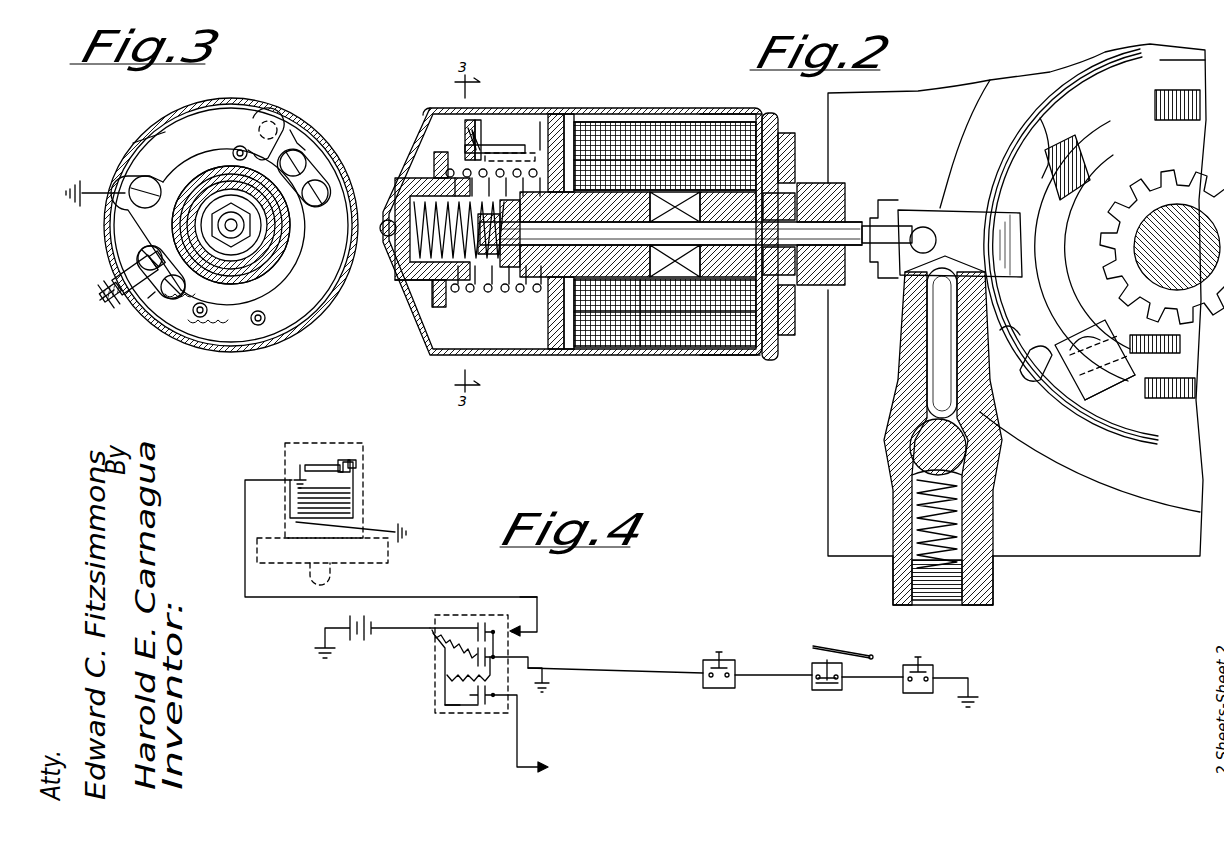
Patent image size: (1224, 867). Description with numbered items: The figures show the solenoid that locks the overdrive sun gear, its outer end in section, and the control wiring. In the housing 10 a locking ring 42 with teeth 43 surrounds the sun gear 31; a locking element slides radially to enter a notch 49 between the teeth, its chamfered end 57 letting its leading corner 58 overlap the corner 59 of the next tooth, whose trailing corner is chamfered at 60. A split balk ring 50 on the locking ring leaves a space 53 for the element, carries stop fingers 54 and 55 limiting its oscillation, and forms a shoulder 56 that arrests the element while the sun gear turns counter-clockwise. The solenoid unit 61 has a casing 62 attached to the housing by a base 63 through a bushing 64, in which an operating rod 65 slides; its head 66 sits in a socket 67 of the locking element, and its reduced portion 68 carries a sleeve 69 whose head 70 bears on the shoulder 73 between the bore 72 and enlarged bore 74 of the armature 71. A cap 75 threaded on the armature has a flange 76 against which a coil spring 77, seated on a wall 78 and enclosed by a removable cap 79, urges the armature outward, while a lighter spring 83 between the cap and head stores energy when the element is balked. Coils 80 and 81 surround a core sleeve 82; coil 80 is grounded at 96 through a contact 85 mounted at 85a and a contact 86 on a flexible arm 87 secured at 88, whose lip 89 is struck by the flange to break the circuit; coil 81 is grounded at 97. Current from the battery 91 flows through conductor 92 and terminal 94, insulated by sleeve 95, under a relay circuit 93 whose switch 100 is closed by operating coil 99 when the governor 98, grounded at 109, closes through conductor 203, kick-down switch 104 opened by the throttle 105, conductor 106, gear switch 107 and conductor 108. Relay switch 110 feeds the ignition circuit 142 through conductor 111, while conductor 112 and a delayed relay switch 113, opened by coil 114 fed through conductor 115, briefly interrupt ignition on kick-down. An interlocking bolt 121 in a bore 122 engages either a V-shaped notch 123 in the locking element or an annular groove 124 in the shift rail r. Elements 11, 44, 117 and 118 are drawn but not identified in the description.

In FIG. 2, the housing 10 is at (1017, 300).
In FIG. 2, the pinion gear 11 is at (1160, 195).
In FIG. 2, the sun gear 31 is at (1190, 195).
In FIG. 2, the locking ring 42 is at (1178, 357).
In FIG. 2, the teeth 43 is at (1175, 400).
In FIG. 2, the ring 44 is at (1090, 130).
In FIG. 2, the recesses 49 is at (1110, 390).
In FIG. 2, the balk ring 50 is at (1135, 112).
In FIG. 2, the space 53 is at (1080, 345).
In FIG. 2, the stop finger 54 is at (1025, 365).
In FIG. 2, the stop finger 55 is at (1020, 160).
In FIG. 2, the shoulder 56 is at (1045, 130).
In FIG. 2, the inner end 57 is at (1005, 238).
In FIG. 2, the leading corner 58 is at (1000, 330).
In FIG. 2, the corner 59 is at (1128, 400).
In FIG. 2, the chamfer 60 is at (1040, 400).
In FIG. 2, the solenoid unit 61 is at (758, 360).
In FIG. 4, the solenoid unit 61 is at (356, 447).
In FIG. 2, the casing 62 is at (720, 355).
In FIG. 2, the base 63 is at (798, 133).
In FIG. 2, the bushing 64 is at (725, 125).
In FIG. 2, the operating rod 65 is at (862, 215).
In FIG. 4, the operating rod 65 is at (332, 573).
In FIG. 2, the head 66 is at (912, 262).
In FIG. 2, the socket 67 is at (900, 207).
In FIG. 3, the reduced portion 68 is at (245, 226).
In FIG. 2, the reduced portion 68 is at (620, 120).
In FIG. 2, the sleeve 69 is at (590, 135).
In FIG. 2, the head 70 is at (490, 292).
In FIG. 3, the armature 71 is at (238, 268).
In FIG. 2, the armature 71 is at (690, 225).
In FIG. 2, the bore 72 is at (640, 195).
In FIG. 2, the shoulder 73 is at (530, 290).
In FIG. 2, the enlarged bore 74 is at (444, 300).
In FIG. 3, the cap 75 is at (265, 258).
In FIG. 2, the cap 75 is at (410, 280).
In FIG. 2, the flange 76 is at (433, 307).
In FIG. 3, the coil spring 77 is at (205, 175).
In FIG. 2, the coil spring 77 is at (438, 320).
In FIG. 3, the wall 78 is at (312, 305).
In FIG. 2, the wall 78 is at (553, 350).
In FIG. 3, the removable cap 79 is at (242, 353).
In FIG. 2, the removable cap 79 is at (430, 112).
In FIG. 3, the solenoid coil 80 is at (205, 320).
In FIG. 2, the solenoid coil 80 is at (612, 350).
In FIG. 4, the solenoid coil 80 is at (335, 492).
In FIG. 3, the solenoid coil 81 is at (267, 325).
In FIG. 2, the solenoid coil 81 is at (642, 345).
In FIG. 4, the solenoid coil 81 is at (340, 522).
In FIG. 2, the core sleeve 82 is at (672, 350).
In FIG. 3, the spring 83 is at (252, 235).
In FIG. 2, the spring 83 is at (420, 200).
In FIG. 3, the contact 85 is at (297, 138).
In FIG. 2, the contact 85 is at (475, 135).
In FIG. 4, the contact 85 is at (355, 463).
In FIG. 3, the mounting 85a is at (316, 160).
In FIG. 3, the contact 86 is at (275, 116).
In FIG. 2, the contact 86 is at (484, 135).
In FIG. 4, the contact 86 is at (358, 470).
In FIG. 3, the flexible arm 87 is at (150, 140).
In FIG. 2, the flexible arm 87 is at (490, 140).
In FIG. 4, the flexible arm 87 is at (323, 465).
In FIG. 3, the securing point 88 is at (128, 180).
In FIG. 3, the lip 89 is at (256, 112).
In FIG. 4, the battery 91 is at (348, 625).
In FIG. 3, the conductor 92 is at (90, 272).
In FIG. 4, the conductor 92 is at (520, 600).
In FIG. 4, the relay circuit 93 is at (540, 620).
In FIG. 3, the terminal 94 is at (106, 305).
In FIG. 4, the terminal 94 is at (290, 480).
In FIG. 3, the insulating sleeve 95 is at (148, 300).
In FIG. 3, the ground 96 is at (80, 205).
In FIG. 4, the ground 96 is at (298, 468).
In FIG. 4, the ground 97 is at (408, 528).
In FIG. 4, the governor 98 is at (926, 658).
In FIG. 4, the operating coil 99 is at (452, 620).
In FIG. 4, the relay switch 100 is at (488, 622).
In FIG. 4, the kick-down switch 104 is at (827, 698).
In FIG. 4, the throttle 105 is at (825, 645).
In FIG. 4, the conductor 106 is at (756, 676).
In FIG. 4, the gear switch 107 is at (712, 646).
In FIG. 4, the conductor 108 is at (635, 675).
In FIG. 4, the ground 109 is at (972, 695).
In FIG. 4, the relay switch 110 is at (530, 662).
In FIG. 4, the conductor 111 is at (455, 712).
In FIG. 4, the conductor 112 is at (447, 670).
In FIG. 4, the relay switch 113 is at (480, 706).
In FIG. 4, the relay operating coil 114 is at (470, 690).
In FIG. 4, the conductor 115 is at (460, 680).
In FIG. 2, the pivot 117 is at (1000, 210).
In FIG. 2, the link 118 is at (962, 208).
In FIG. 2, the interlocking bolt 121 is at (930, 375).
In FIG. 2, the bore 122 is at (915, 405).
In FIG. 2, the V-shaped notch 123 is at (915, 280).
In FIG. 2, the annular groove 124 is at (910, 446).
In FIG. 4, the ignition circuit 142 is at (525, 768).
In FIG. 4, the conductor 203 is at (878, 678).
In FIG. 2, the shift rail r is at (893, 470).